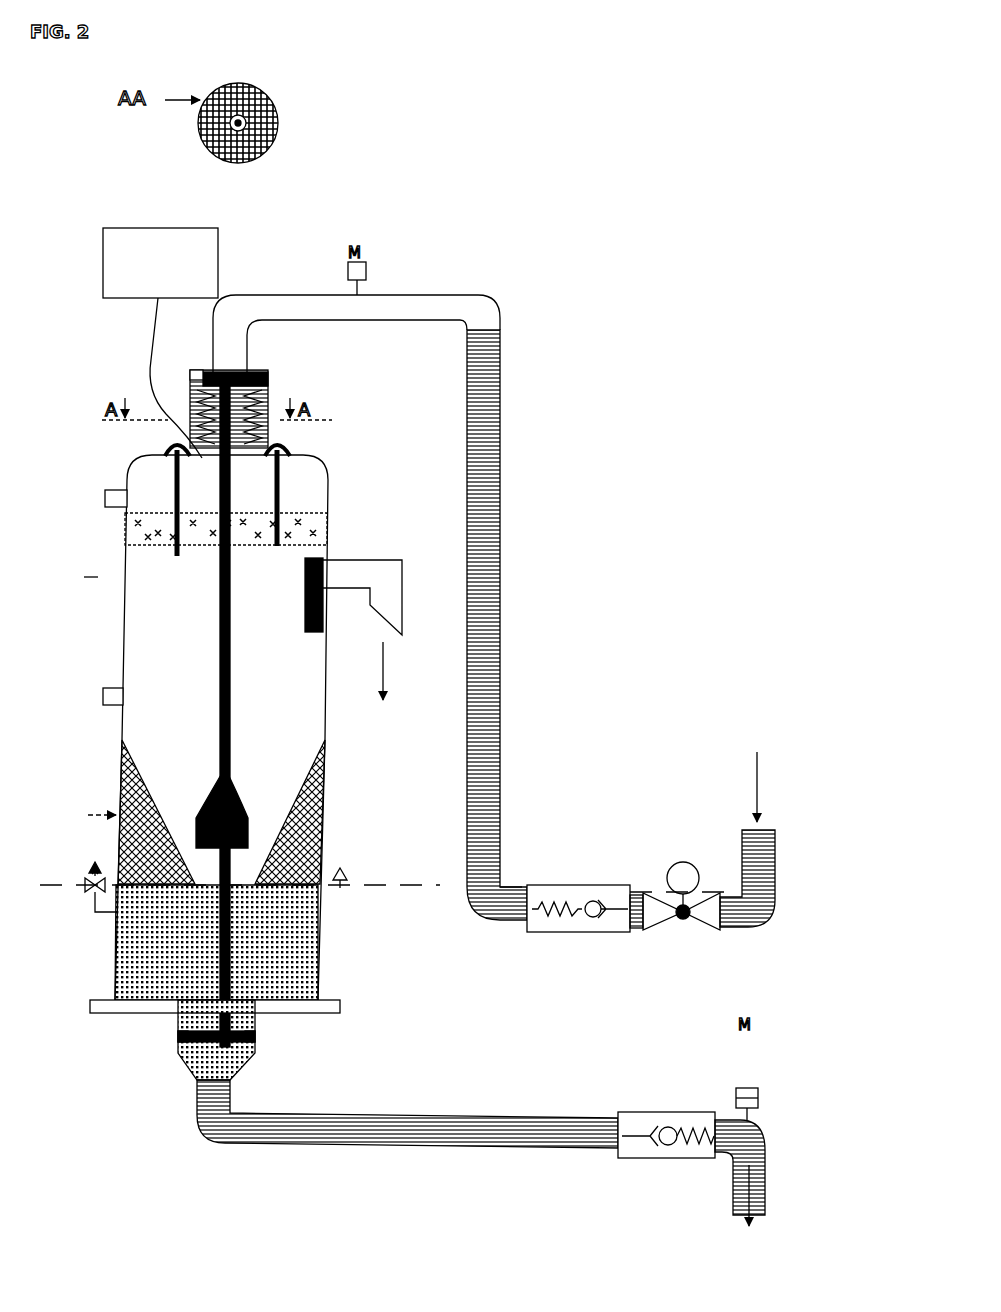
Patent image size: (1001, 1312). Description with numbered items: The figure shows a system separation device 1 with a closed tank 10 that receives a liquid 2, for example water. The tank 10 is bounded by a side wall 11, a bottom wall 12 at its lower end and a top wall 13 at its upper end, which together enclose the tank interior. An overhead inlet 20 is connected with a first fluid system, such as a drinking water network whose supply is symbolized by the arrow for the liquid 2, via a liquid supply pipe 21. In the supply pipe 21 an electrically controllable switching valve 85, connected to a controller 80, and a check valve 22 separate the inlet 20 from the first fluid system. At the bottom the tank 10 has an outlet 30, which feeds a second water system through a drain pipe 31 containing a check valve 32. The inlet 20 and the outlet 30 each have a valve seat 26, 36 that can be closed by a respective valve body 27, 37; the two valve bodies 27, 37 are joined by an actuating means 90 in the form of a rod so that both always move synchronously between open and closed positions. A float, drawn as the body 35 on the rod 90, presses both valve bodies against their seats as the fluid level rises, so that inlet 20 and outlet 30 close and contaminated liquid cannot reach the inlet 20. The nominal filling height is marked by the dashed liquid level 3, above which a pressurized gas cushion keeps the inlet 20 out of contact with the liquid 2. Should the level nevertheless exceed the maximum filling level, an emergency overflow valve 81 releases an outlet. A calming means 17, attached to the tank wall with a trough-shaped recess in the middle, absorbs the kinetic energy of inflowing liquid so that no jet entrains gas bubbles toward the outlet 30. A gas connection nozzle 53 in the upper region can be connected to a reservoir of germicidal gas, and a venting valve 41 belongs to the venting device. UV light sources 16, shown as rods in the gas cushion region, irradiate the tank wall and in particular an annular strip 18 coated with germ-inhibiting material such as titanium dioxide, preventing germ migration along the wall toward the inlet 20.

The system separation device 1 is at (657, 235).
The liquid 2 is at (362, 987).
The liquid level 3 is at (52, 885).
The tank 10 is at (148, 617).
The side wall 11 is at (328, 702).
The bottom wall 12 is at (110, 1012).
The top wall 13 is at (292, 452).
The UV light source 16 is at (219, 264).
The conical insert 17 is at (300, 796).
The annular strip 18 is at (127, 528).
The overhead inlet 20 is at (210, 366).
The liquid supply pipe 21 is at (502, 447).
The check valve 22 is at (590, 884).
The valve seat 26 is at (258, 374).
The valve body 27 is at (203, 384).
The outlet 30 is at (260, 1040).
The drain pipe 31 is at (488, 1118).
The check valve 32 is at (668, 1110).
The displacement cone 35 is at (246, 832).
The valve seat 36 is at (180, 1040).
The valve body 37 is at (252, 1050).
The venting valve 41 is at (106, 490).
The gas connection nozzle 53 is at (104, 688).
The controller 80 is at (683, 862).
The emergency overflow valve 81 is at (330, 571).
The switching valve 85 is at (219, 238).
The actuating means 90 is at (218, 776).